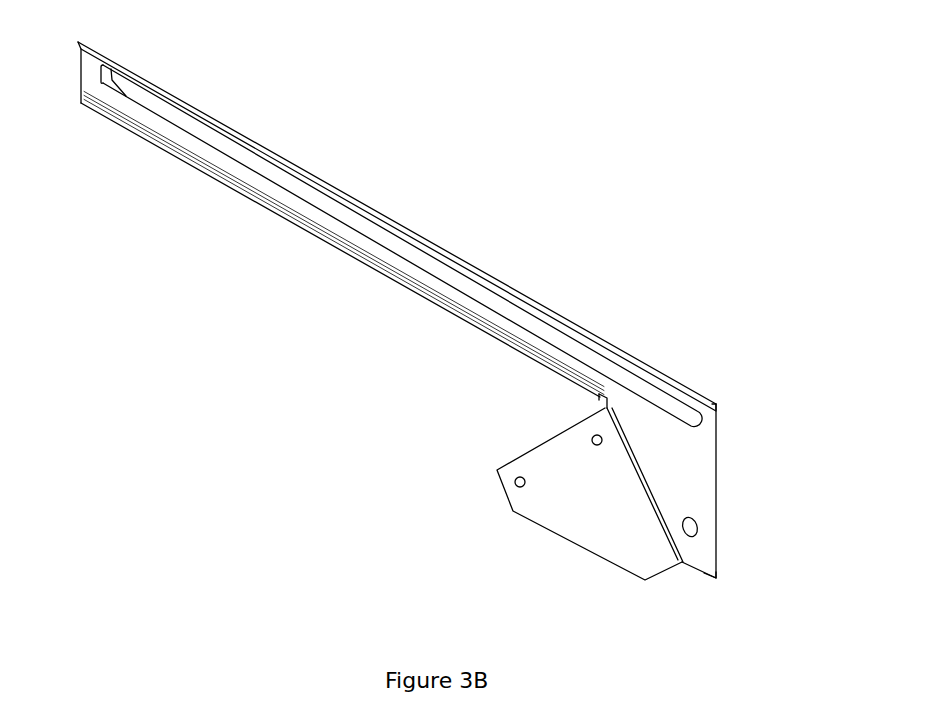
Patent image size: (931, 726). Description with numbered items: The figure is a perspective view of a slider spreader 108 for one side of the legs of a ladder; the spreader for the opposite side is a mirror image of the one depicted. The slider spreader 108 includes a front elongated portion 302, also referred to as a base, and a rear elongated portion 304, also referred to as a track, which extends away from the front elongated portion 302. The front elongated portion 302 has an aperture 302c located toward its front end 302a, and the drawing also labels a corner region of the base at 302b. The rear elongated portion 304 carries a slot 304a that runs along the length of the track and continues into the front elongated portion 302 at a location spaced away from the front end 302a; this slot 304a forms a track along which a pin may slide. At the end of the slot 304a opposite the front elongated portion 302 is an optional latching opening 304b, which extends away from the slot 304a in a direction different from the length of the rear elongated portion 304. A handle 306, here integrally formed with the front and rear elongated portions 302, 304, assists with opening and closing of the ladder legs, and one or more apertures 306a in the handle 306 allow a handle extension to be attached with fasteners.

The slider spreader 108 is at (122, 33).
The rear elongated portion 304 is at (347, 196).
The slot 304a is at (397, 250).
The latching opening 304b is at (112, 82).
The front elongated portion 302 is at (702, 462).
The front end 302a is at (710, 580).
The plate upper corner 302b is at (702, 398).
The aperture 302c is at (698, 530).
The handle 306 is at (626, 530).
The apertures 306a is at (593, 437).